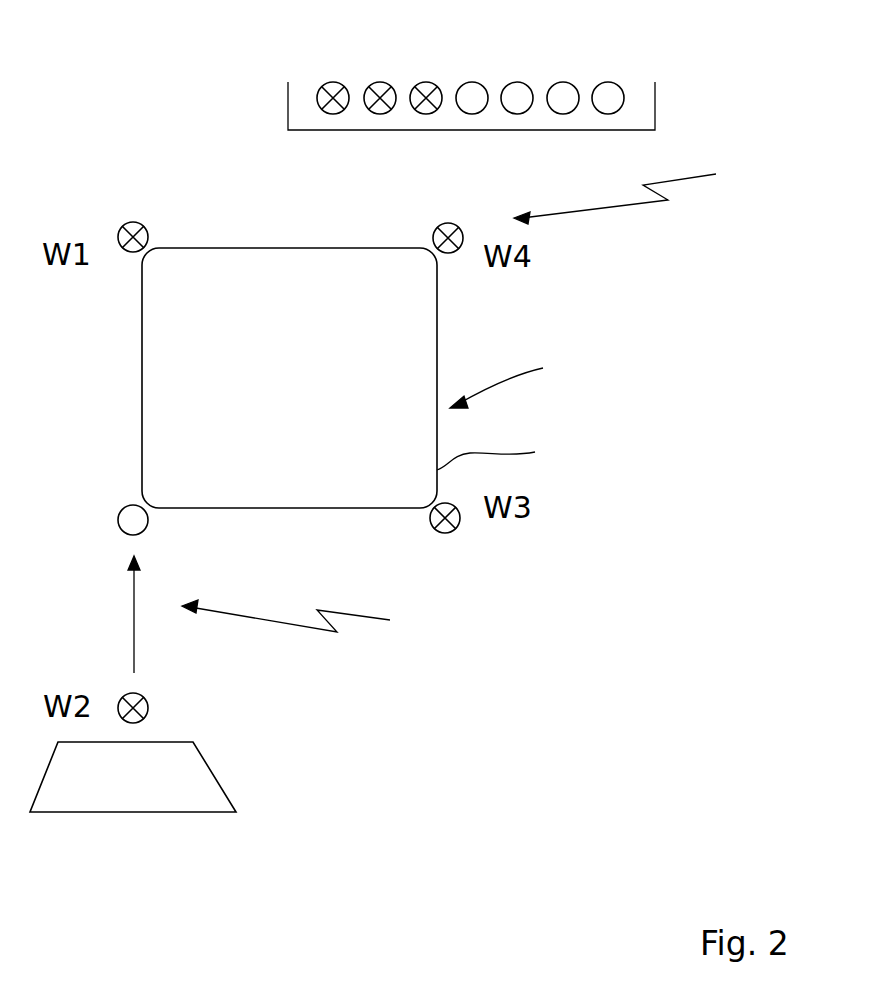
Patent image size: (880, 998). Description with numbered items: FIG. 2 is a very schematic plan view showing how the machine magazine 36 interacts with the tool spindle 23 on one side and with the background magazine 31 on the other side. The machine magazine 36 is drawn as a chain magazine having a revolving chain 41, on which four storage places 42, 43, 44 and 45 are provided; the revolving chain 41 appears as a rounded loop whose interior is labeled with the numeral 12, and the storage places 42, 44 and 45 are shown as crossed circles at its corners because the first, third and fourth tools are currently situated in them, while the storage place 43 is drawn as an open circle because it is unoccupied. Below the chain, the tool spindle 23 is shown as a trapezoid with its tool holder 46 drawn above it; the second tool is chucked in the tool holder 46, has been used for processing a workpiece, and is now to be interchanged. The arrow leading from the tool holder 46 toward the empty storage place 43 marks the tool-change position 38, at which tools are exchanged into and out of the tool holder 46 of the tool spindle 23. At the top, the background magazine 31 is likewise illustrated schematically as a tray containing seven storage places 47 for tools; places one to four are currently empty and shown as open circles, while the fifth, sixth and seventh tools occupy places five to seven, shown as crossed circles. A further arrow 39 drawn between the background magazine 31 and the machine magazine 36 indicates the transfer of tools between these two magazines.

The substrate / wafer 12 is at (307, 391).
The tool spindle 23 is at (122, 786).
The background magazine 31 is at (655, 113).
The machine magazine 36 is at (512, 376).
The tool-change position 38 is at (304, 617).
The transfer direction 39 is at (631, 191).
The revolving chain 41 is at (502, 451).
The storage place 42 is at (458, 526).
The storage place 43 is at (120, 527).
The storage place 44 is at (122, 224).
The storage place 45 is at (437, 226).
The tool holder 46 is at (148, 708).
The storage places 47 is at (620, 89).